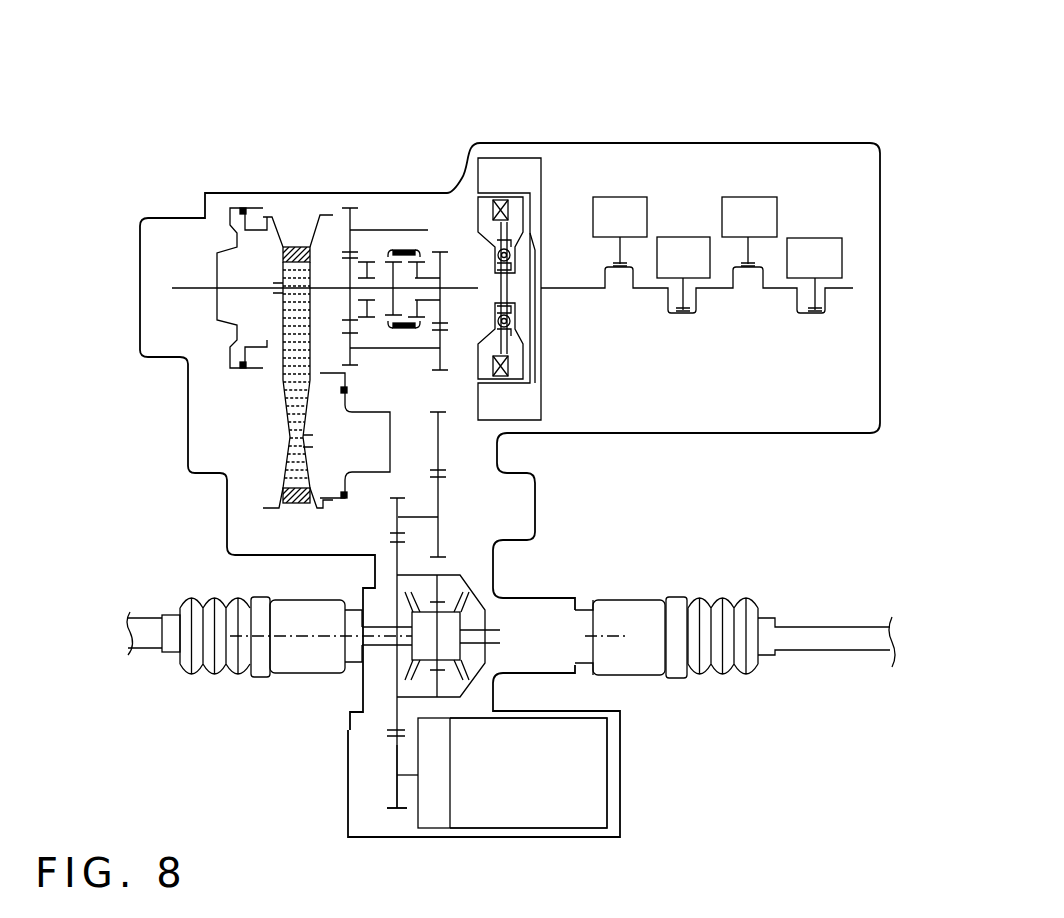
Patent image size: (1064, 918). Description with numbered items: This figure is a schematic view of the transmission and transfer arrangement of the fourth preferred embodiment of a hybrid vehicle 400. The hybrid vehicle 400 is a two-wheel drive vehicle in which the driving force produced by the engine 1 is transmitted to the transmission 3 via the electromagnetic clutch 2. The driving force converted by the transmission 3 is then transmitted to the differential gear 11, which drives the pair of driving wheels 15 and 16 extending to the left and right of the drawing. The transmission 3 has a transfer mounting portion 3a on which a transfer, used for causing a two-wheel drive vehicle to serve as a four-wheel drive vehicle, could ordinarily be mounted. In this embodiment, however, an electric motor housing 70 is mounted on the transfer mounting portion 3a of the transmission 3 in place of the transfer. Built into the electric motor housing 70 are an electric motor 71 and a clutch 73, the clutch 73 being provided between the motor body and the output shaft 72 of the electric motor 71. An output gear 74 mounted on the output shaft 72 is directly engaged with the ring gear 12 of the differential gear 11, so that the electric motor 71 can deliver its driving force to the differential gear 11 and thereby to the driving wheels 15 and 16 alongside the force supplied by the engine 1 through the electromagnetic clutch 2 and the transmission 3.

The engine 1 is at (799, 140).
The electromagnetic clutch 2 is at (509, 154).
The transmission 3 is at (168, 212).
The transfer mounting portion 3a is at (503, 697).
The differential gear 11 is at (483, 578).
The ring gear 12 is at (390, 713).
The driving wheel 15 is at (143, 645).
The driving wheel 16 is at (857, 645).
The electric motor housing 70 is at (507, 805).
The electric motor 71 is at (543, 812).
The output shaft 72 is at (408, 787).
The clutch 73 is at (437, 812).
The output gear 74 is at (395, 761).
The hybrid vehicle 400 is at (968, 125).